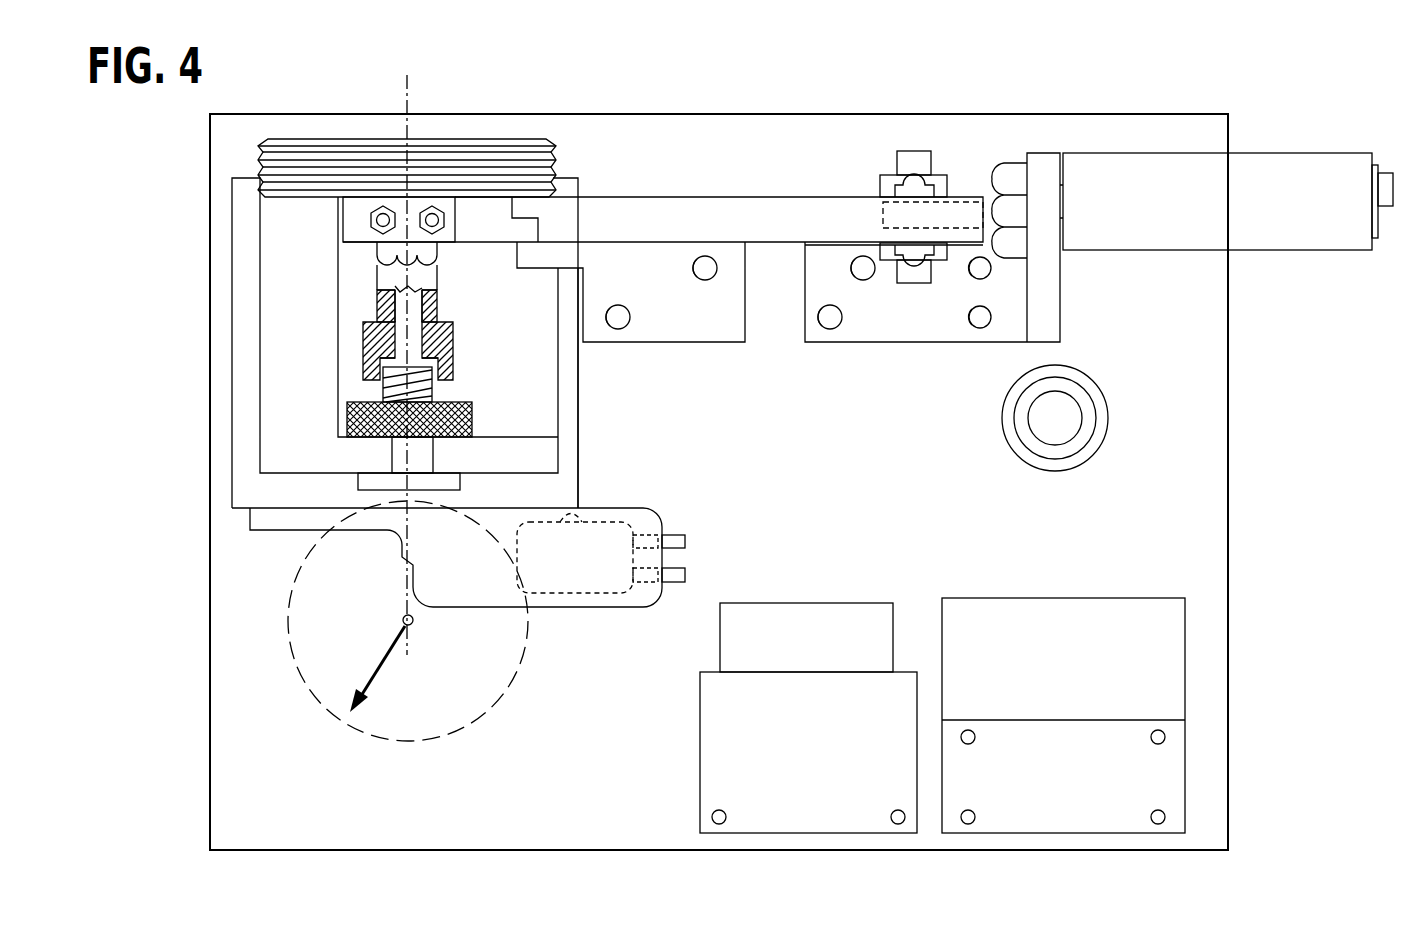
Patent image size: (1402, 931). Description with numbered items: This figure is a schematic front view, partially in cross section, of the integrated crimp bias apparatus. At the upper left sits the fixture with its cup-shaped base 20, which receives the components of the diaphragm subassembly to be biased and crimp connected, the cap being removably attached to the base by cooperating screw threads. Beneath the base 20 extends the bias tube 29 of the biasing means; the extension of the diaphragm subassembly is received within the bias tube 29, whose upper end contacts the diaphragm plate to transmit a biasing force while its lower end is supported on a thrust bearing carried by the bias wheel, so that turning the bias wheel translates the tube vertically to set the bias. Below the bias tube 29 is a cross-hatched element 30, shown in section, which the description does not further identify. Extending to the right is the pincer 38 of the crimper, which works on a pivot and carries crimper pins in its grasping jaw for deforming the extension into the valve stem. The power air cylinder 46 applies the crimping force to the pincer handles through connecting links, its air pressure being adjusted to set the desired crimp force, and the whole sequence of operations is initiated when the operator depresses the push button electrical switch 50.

The cup-shaped base 20 is at (262, 157).
The bias tube 29 is at (377, 262).
The damping block 30 is at (347, 425).
The pincer 38 is at (692, 180).
The power air cylinder 46 is at (1255, 162).
The push button electrical switch 50 is at (1067, 418).